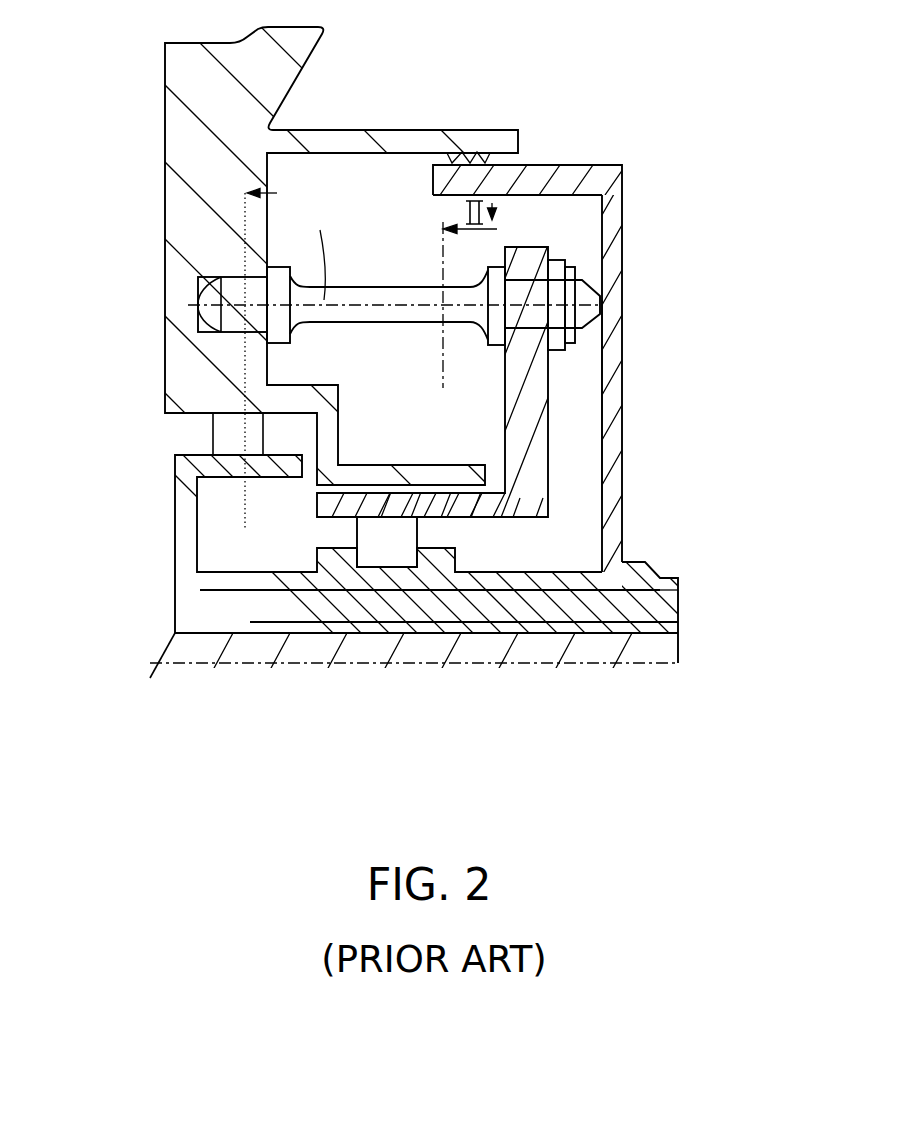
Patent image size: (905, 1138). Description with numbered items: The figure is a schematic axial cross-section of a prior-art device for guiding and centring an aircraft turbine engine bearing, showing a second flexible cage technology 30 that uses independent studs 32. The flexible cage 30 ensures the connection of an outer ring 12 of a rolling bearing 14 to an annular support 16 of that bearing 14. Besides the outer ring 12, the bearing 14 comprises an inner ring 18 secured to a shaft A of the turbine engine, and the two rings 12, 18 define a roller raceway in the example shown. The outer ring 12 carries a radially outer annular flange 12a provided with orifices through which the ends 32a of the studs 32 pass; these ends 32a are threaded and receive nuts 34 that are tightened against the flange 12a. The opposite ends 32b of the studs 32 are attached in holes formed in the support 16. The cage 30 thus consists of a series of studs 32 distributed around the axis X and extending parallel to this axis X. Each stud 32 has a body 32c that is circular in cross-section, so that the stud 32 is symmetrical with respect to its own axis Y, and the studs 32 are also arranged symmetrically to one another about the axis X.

The outer ring 12 is at (574, 448).
The radially outer annular flange 12a is at (540, 402).
The rolling bearing 14 is at (450, 529).
The annular support 16 is at (160, 400).
The inner ring 18 is at (342, 563).
The flexible cage 30 is at (494, 208).
The stud 32 is at (470, 275).
The end of stud 32a is at (570, 313).
The opposite end of stud 32b is at (237, 287).
The body of stud 32c is at (383, 296).
The nut 34 is at (572, 264).
The shaft A is at (667, 596).
The axis X is at (643, 660).
The axis of stud Y is at (322, 241).